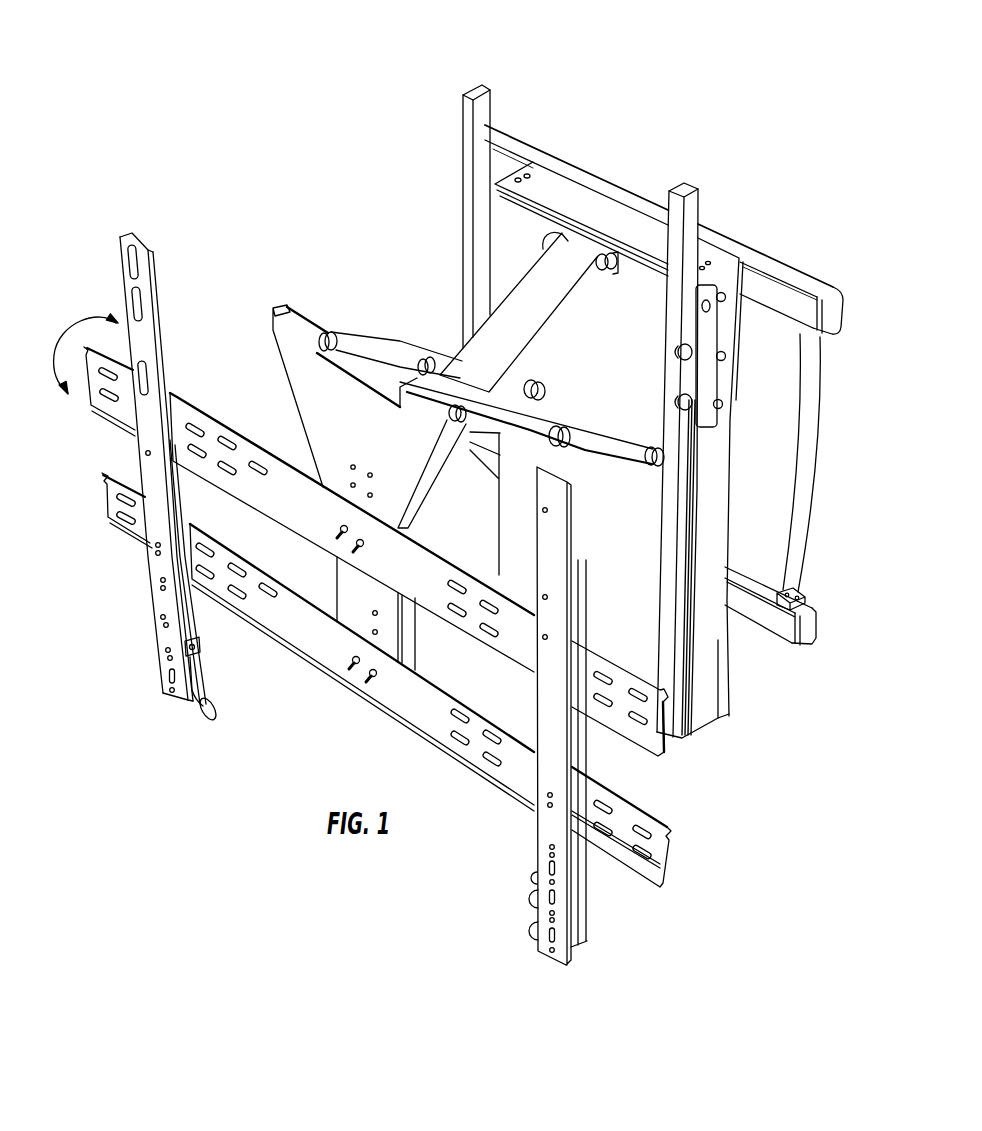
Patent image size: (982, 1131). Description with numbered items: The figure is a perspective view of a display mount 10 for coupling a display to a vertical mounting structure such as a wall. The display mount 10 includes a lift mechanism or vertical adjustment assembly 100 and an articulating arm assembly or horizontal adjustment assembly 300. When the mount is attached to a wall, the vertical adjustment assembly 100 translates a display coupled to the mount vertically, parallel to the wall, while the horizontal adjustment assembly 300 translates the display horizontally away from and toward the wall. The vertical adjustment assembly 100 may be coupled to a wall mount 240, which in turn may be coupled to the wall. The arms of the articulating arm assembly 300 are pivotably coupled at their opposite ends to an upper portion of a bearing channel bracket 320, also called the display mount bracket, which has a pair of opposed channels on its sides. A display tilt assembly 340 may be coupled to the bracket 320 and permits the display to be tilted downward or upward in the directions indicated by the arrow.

The display mount 10 is at (253, 108).
The vertical adjustment assembly 100 is at (746, 717).
The wall mount 240 is at (812, 258).
The articulating arm assembly 300 is at (247, 290).
The bearing channel bracket 320 is at (413, 645).
The display tilt assembly 340 is at (118, 626).